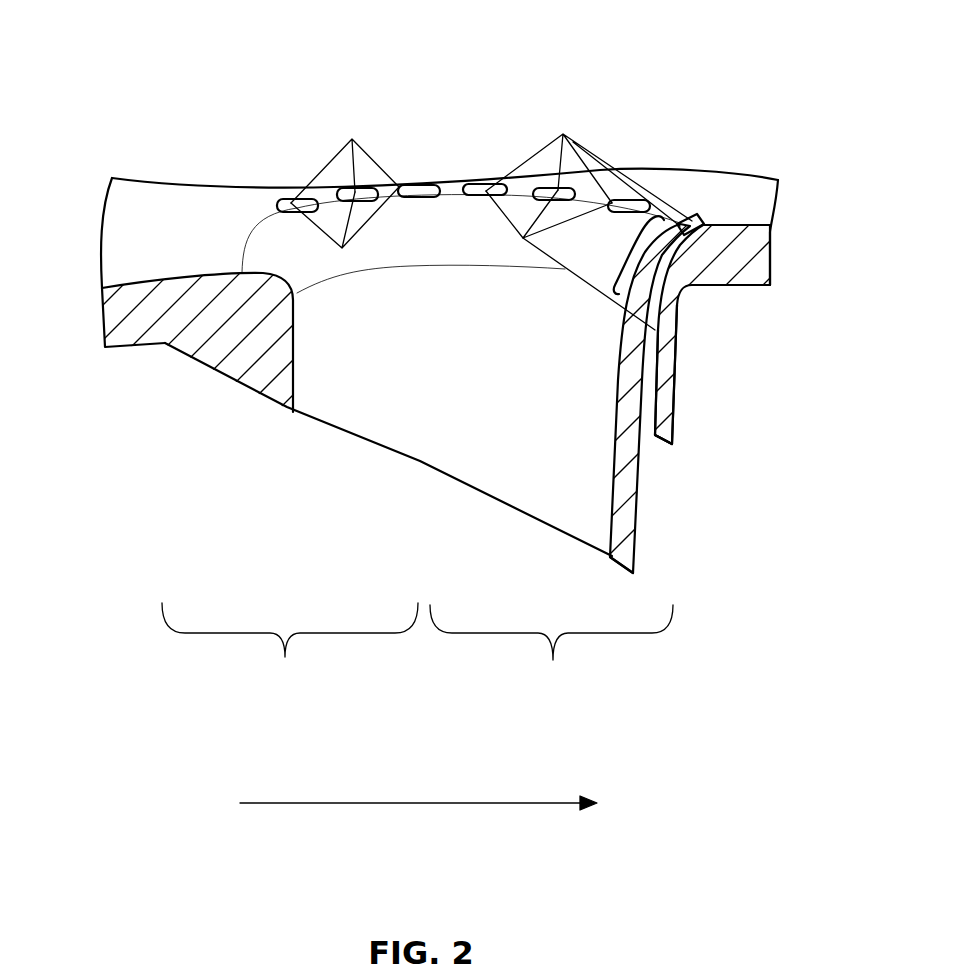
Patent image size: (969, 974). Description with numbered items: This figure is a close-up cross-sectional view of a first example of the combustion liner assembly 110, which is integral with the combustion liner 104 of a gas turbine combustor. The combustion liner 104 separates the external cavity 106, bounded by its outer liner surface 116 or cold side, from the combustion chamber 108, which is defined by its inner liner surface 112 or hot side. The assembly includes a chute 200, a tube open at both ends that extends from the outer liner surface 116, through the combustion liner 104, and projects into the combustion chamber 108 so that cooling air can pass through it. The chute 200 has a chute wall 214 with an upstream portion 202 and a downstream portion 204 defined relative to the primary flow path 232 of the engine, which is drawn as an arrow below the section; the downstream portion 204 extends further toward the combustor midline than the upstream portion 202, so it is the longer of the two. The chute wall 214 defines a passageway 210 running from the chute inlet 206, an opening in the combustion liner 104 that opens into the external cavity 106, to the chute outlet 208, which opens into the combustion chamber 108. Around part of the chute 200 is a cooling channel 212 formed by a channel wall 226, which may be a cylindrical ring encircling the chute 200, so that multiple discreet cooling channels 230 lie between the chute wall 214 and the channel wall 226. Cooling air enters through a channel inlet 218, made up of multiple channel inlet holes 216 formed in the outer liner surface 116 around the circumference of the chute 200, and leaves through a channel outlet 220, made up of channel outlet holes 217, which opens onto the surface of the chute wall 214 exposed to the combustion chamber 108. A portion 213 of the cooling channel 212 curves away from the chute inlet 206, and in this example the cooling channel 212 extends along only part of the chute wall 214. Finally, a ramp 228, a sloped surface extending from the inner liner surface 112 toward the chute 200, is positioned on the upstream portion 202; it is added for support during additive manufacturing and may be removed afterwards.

The combustion liner 104 is at (760, 263).
The external cavity 106 is at (459, 31).
The combustion chamber 108 is at (451, 558).
The combustion liner assembly 110 is at (663, 98).
The inner liner surface 112 is at (108, 348).
The outer liner surface 116 is at (760, 194).
The chute 200 is at (625, 541).
The upstream portion 202 is at (290, 648).
The downstream portion 204 is at (551, 649).
The chute inlet 206 is at (273, 238).
The chute outlet 208 is at (358, 432).
The passageway 210 is at (497, 400).
The cooling channel 212 is at (652, 387).
The portion of the cooling channel 213 is at (624, 262).
The chute wall 214 is at (623, 468).
The channel inlet holes 216 is at (484, 167).
The channel outlet holes 217 is at (643, 431).
The channel inlet 218 is at (697, 217).
The channel outlet 220 is at (651, 452).
The channel wall 226 is at (670, 348).
The ramp 228 is at (236, 373).
The cooling channels 230 is at (473, 258).
The primary flow path 232 is at (272, 803).